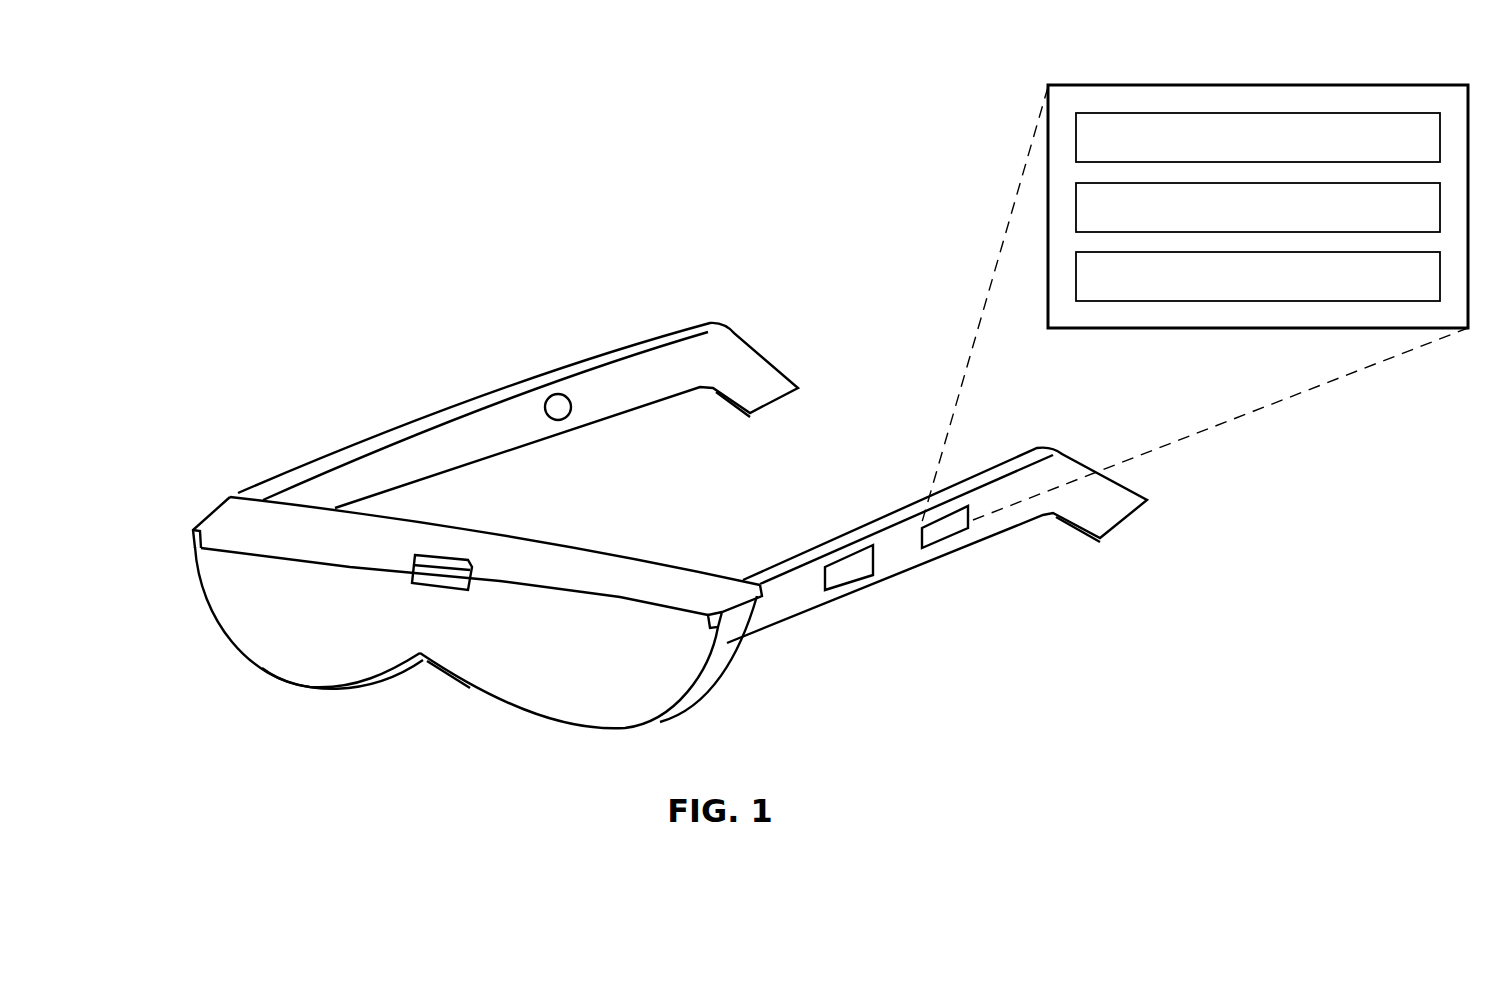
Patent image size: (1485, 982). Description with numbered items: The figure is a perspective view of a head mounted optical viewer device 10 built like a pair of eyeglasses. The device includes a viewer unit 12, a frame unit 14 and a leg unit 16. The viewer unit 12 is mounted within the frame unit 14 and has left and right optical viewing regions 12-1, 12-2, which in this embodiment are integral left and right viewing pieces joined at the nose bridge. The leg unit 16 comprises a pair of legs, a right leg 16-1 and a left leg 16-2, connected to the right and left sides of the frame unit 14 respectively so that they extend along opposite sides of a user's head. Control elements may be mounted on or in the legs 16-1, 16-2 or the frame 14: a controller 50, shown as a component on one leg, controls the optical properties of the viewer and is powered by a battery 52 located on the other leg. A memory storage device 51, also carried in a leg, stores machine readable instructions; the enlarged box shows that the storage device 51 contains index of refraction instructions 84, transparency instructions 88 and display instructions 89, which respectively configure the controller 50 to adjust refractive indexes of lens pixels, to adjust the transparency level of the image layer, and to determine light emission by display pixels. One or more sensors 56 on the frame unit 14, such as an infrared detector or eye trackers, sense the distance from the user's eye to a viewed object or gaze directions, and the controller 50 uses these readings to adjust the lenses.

The head mounted optical viewer device 10 is at (322, 260).
The viewer unit 12 is at (168, 606).
The left optical viewing region 12-1 is at (270, 630).
The right optical viewing region 12-2 is at (603, 672).
The frame unit 14 is at (555, 557).
The leg unit 16 is at (750, 315).
The right leg 16-1 is at (470, 408).
The left leg 16-2 is at (905, 510).
The controller 50 is at (850, 565).
The memory storage device 51 is at (948, 527).
The battery 52 is at (558, 398).
The sensors 56 is at (443, 576).
The index of refraction instructions 84 is at (1075, 145).
The transparency instructions 88 is at (1075, 212).
The display instructions 89 is at (1075, 277).